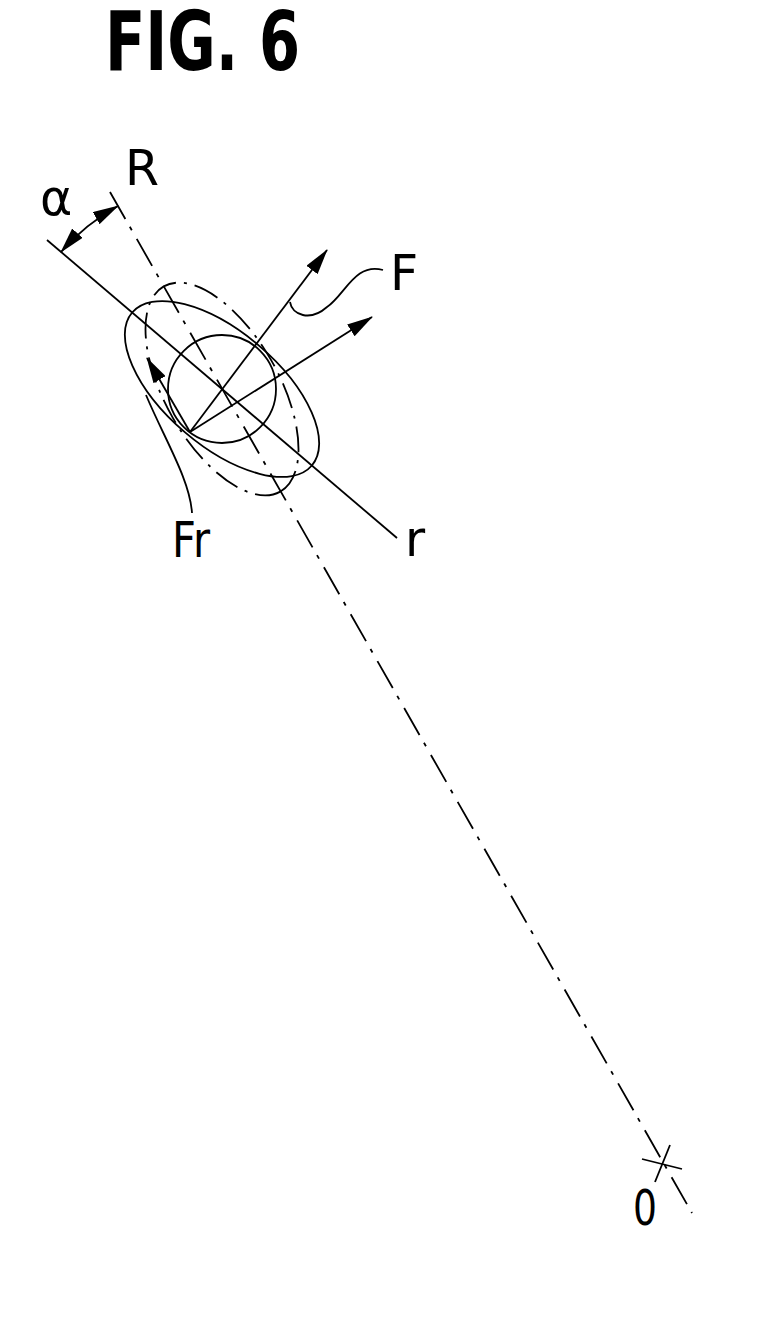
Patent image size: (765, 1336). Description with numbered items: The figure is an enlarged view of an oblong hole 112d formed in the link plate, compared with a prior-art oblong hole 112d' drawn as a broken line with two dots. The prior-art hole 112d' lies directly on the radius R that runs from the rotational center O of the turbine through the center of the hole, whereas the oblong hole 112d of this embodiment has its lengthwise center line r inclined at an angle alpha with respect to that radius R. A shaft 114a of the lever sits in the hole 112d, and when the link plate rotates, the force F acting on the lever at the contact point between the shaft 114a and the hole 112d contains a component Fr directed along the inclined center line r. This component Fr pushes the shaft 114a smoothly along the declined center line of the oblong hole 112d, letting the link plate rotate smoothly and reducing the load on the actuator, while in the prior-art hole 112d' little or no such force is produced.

The oblong hole 112d is at (185, 390).
The prior-art oblong hole 112d' is at (249, 341).
The shaft of the lever 114a is at (268, 352).